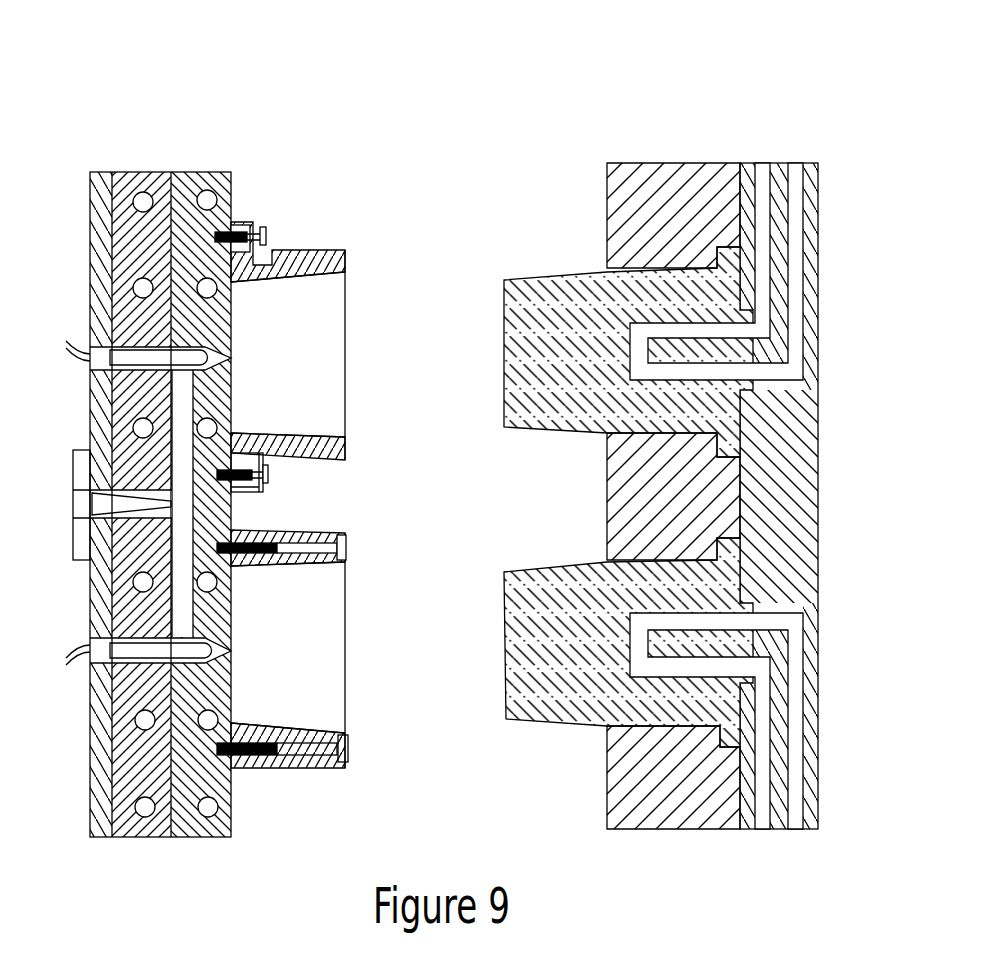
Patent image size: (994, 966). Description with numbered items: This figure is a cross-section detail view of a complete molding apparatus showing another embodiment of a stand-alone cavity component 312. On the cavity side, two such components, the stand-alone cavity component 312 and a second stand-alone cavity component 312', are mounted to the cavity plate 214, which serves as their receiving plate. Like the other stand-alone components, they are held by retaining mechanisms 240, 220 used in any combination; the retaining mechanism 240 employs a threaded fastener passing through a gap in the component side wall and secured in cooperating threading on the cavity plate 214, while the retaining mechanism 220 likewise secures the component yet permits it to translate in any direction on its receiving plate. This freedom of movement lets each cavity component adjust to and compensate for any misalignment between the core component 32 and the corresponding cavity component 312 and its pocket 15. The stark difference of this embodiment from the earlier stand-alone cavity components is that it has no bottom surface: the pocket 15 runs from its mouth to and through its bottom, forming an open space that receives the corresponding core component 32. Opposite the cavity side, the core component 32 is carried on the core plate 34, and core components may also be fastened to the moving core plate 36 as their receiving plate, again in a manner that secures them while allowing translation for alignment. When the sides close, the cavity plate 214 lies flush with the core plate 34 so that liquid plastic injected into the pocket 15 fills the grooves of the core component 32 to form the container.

The cavity plate 214 is at (192, 167).
The retaining mechanism 220 is at (270, 220).
The core component 32 is at (535, 276).
The stand-alone cavity component 312 is at (352, 328).
The stand-alone cavity component 312' is at (346, 607).
The retaining mechanism 240 is at (350, 544).
The pocket 15 is at (288, 502).
The core plate 34 is at (680, 162).
The moving core plate 36 is at (818, 290).